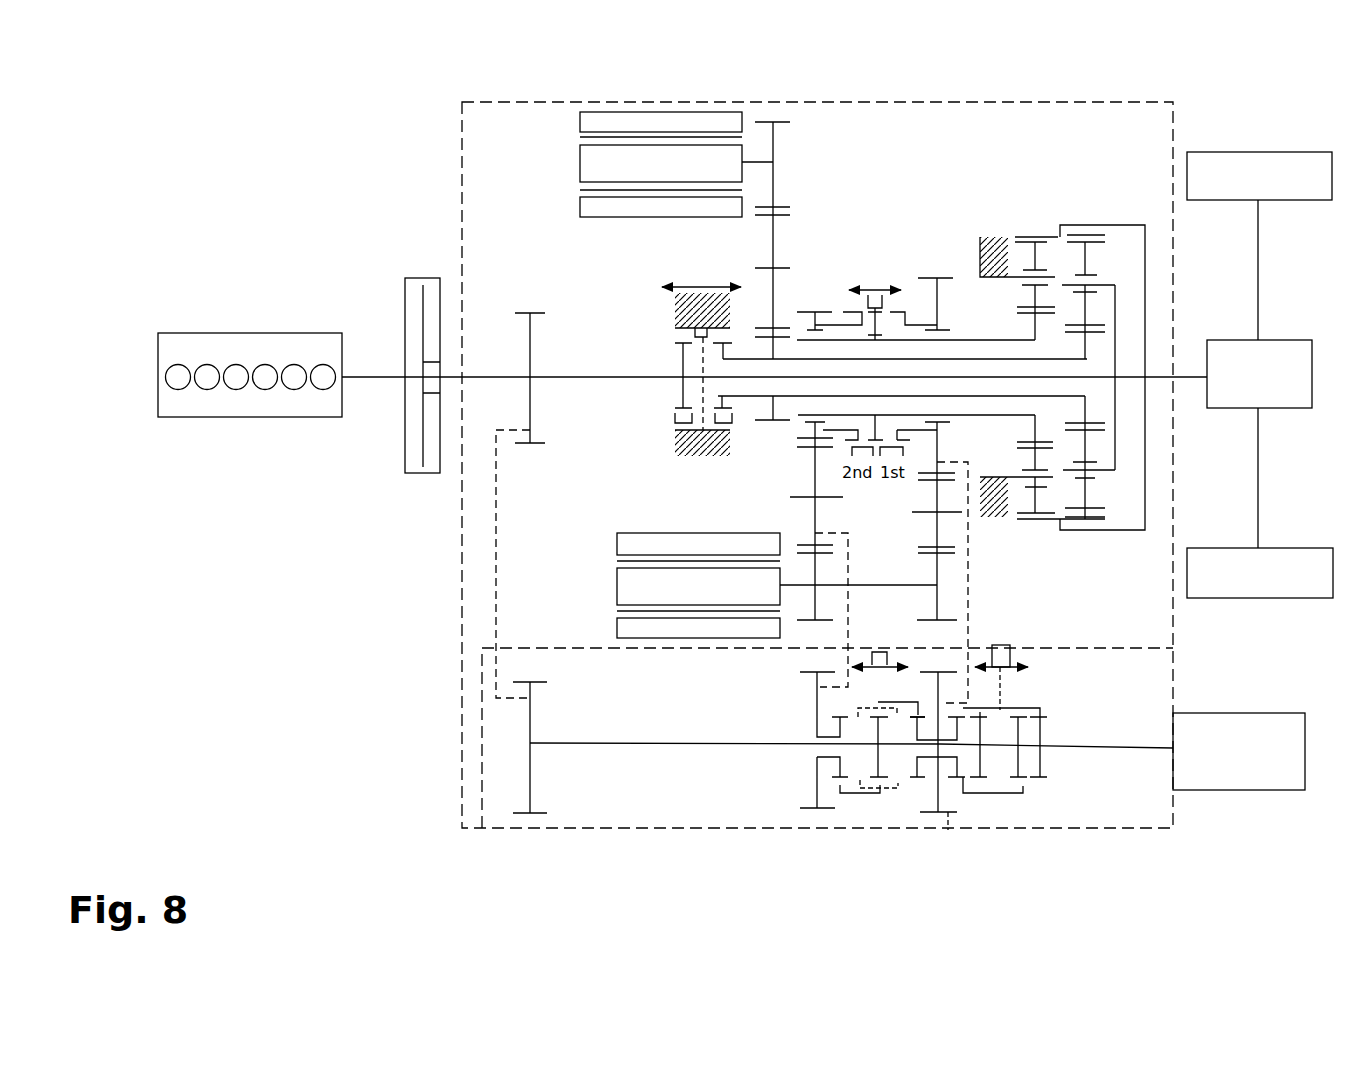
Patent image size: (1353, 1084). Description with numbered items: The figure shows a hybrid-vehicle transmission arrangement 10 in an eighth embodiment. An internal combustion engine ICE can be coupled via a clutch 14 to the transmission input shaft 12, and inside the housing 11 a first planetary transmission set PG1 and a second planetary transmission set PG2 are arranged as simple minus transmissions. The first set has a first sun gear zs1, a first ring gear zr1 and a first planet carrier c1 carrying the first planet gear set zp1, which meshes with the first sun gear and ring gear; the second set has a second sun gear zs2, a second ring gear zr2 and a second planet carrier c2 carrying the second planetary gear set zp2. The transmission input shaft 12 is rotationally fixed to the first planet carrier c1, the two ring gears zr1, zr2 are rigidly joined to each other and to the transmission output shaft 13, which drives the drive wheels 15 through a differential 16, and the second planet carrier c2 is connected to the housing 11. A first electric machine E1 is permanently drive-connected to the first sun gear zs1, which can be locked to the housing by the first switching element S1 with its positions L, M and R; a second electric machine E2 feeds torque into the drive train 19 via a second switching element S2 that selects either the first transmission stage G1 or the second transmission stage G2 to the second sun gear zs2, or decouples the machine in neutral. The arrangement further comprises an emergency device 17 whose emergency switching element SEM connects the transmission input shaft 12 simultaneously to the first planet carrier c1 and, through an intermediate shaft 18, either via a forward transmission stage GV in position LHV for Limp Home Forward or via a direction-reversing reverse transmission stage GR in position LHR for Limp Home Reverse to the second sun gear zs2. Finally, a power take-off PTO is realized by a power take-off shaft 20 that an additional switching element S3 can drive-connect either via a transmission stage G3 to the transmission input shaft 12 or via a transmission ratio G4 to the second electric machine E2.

The transmission arrangement 10 is at (455, 137).
The internal combustion engine ICE is at (250, 333).
The clutch 14 is at (415, 280).
The transmission input shaft 12 is at (488, 372).
The first electric machine E1 is at (660, 125).
The second electric machine E2 is at (662, 540).
The first switching element S1 is at (675, 280).
The second switching element S2 is at (858, 268).
The additional switching element S3 is at (1015, 810).
The first planetary transmission set PG1 is at (1157, 293).
The second planetary transmission set PG2 is at (1013, 287).
The first planet gear set zp1 is at (1087, 262).
The second planetary gear set zp2 is at (1027, 257).
The first ring gear zr1 is at (1085, 237).
The second ring gear zr2 is at (1040, 235).
The first sun gear zs1 is at (1087, 347).
The second sun gear zs2 is at (1030, 415).
The first planet carrier c1 is at (1115, 295).
The second planet carrier c2 is at (1013, 277).
The housing 11 is at (985, 233).
The drive train 19 is at (968, 310).
The transmission output shaft 13 is at (1193, 377).
The drive wheels 15 is at (1260, 573).
The differential 16 is at (1259, 374).
The emergency device 17 is at (566, 640).
The intermediate shaft 18 is at (645, 743).
The power take-off shaft 20 is at (1085, 750).
The first transmission stage G1 is at (950, 568).
The second transmission stage G2 is at (800, 523).
The transmission stage G3 is at (508, 705).
The transmission ratio G4 is at (943, 845).
The forward transmission stage GV is at (808, 700).
The reverse transmission stage GR is at (958, 815).
The Limp Home Forward position LHV is at (848, 666).
The Limp Home Reverse position LHR is at (885, 650).
The emergency switching element SEM is at (878, 810).
The power take-off PTO is at (1239, 751).